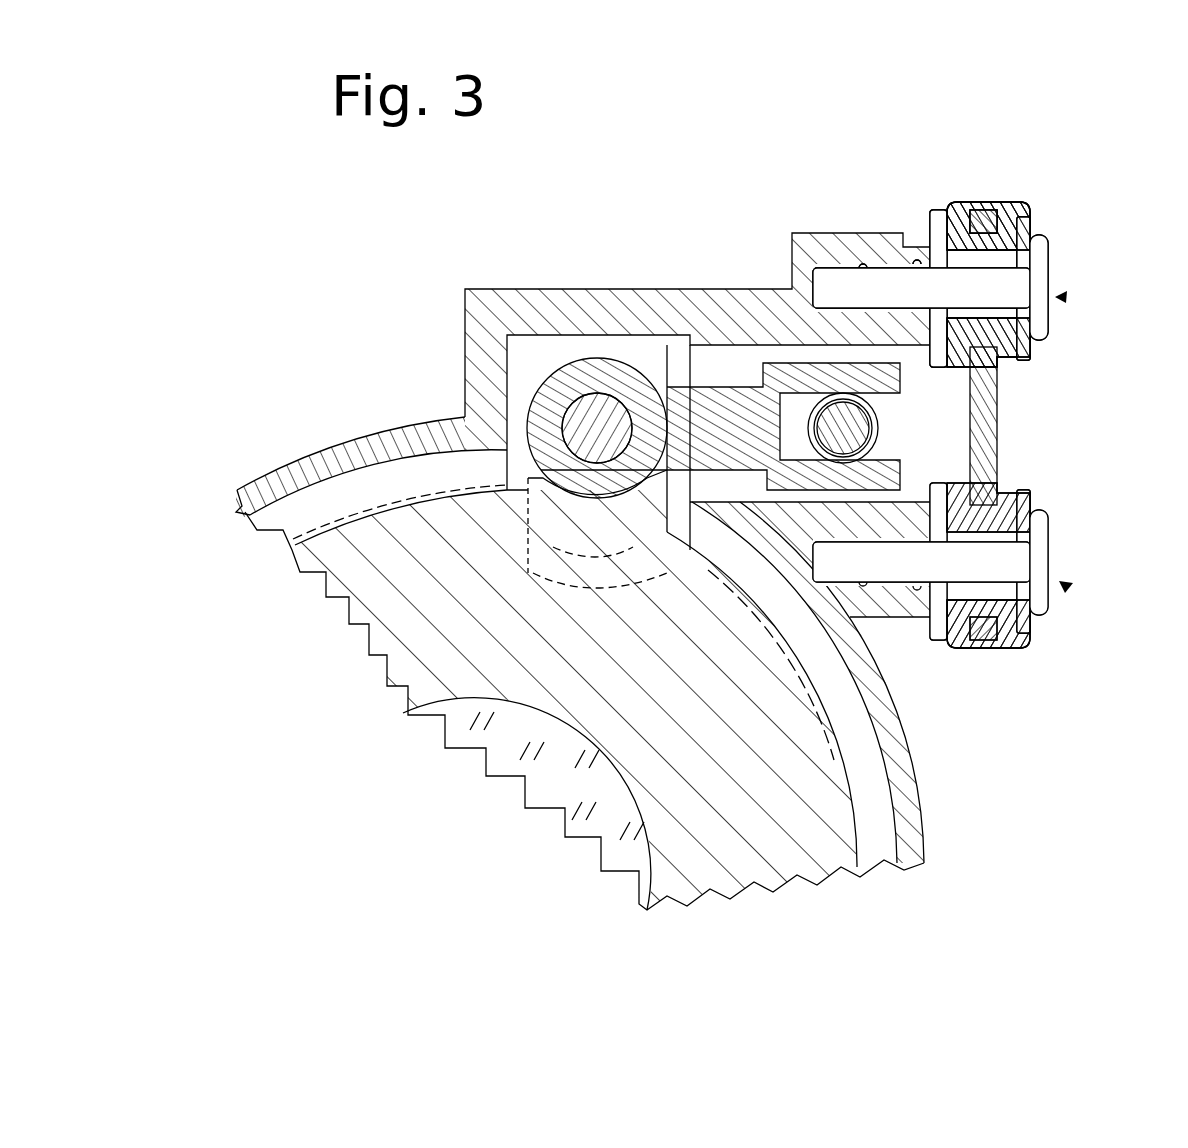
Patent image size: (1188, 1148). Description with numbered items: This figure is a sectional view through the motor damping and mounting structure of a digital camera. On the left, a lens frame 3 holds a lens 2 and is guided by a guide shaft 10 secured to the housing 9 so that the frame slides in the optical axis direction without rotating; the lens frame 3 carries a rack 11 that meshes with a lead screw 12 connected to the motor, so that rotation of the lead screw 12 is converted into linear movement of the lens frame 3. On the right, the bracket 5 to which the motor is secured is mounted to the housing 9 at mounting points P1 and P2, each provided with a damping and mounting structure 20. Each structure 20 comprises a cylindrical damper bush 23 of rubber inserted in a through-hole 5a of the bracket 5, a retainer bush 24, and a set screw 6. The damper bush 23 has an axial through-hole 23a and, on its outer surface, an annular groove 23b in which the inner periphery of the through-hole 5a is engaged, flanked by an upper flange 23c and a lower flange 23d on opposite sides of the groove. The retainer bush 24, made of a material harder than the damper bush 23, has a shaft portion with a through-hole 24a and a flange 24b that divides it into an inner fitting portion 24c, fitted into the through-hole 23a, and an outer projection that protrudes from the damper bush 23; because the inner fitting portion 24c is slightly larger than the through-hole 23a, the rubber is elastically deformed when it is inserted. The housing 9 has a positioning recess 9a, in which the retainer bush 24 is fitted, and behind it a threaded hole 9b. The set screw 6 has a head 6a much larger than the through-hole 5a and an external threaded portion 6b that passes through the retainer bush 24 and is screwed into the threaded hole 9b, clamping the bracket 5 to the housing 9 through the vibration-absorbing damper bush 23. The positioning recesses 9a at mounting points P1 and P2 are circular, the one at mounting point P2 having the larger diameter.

The lens 2 is at (578, 860).
The lens frame 3 is at (584, 767).
The bracket 5 is at (985, 222).
The through-hole 5a is at (968, 372).
The set screw 6 is at (1043, 250).
The head 6a is at (1039, 425).
The external threaded portion 6b is at (835, 287).
The housing 9 is at (487, 300).
The positioning recess 9a is at (915, 250).
The threaded hole 9b is at (863, 266).
The guide shaft 10 is at (593, 423).
The rack 11 is at (680, 417).
The lead screw 12 is at (747, 408).
The damping and mounting structure 20 is at (967, 147).
The cylindrical damper bush 23 is at (1003, 203).
The axial through-hole 23a is at (1003, 262).
The annular groove 23b is at (997, 372).
The upper flange 23c is at (988, 425).
The lower flange 23d is at (953, 228).
The retainer bush 24 is at (1013, 318).
The through-hole 24a is at (1005, 240).
The flange 24b is at (935, 245).
The inner fitting portion 24c is at (1023, 425).
The mounting point P1 is at (1066, 586).
The mounting point P2 is at (1062, 297).